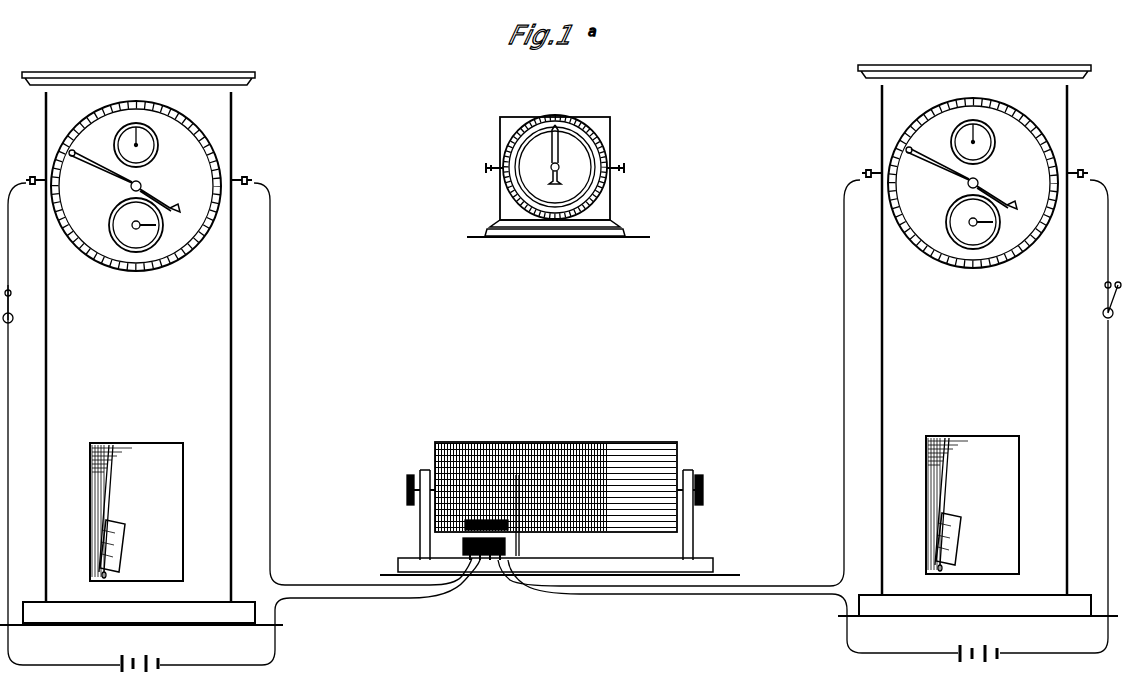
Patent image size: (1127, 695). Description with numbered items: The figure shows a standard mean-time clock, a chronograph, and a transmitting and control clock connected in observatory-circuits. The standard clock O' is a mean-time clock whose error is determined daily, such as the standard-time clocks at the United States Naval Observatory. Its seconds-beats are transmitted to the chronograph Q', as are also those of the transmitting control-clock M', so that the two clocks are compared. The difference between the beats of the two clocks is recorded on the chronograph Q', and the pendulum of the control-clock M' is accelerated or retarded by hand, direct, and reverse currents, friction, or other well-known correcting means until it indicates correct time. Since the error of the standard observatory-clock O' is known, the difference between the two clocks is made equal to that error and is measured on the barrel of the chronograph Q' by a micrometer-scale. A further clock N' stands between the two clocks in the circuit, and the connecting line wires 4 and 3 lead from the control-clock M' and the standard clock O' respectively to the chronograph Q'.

The transmitting control-clock M' is at (141, 348).
The indicating clock N' is at (558, 191).
The standard clock O' is at (978, 340).
The chronograph Q' is at (560, 489).
The line wire 4 is at (241, 427).
The line wire 3 is at (810, 421).